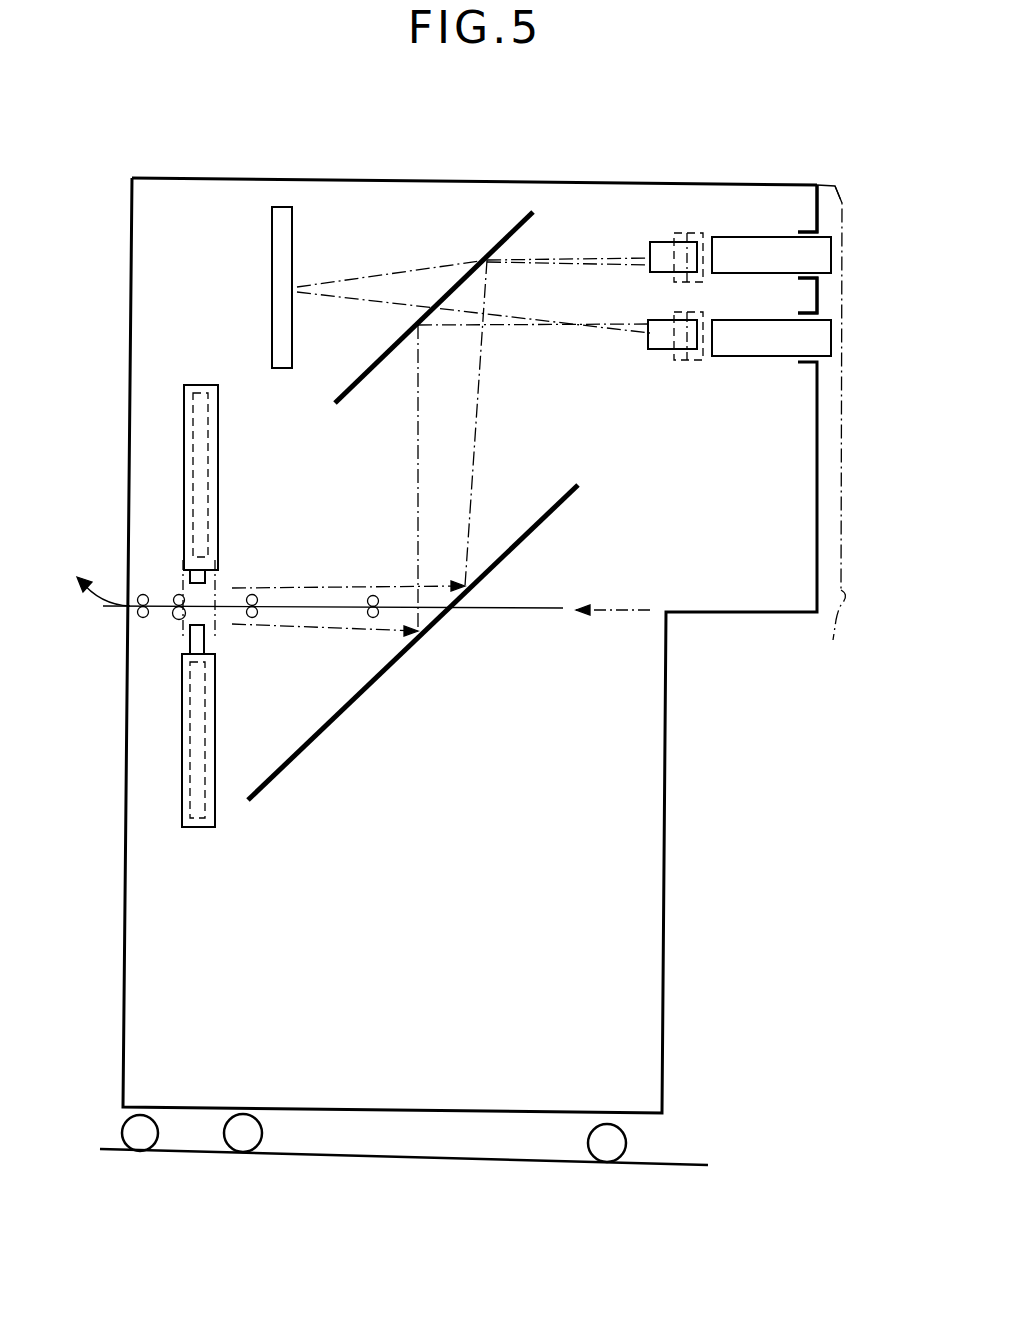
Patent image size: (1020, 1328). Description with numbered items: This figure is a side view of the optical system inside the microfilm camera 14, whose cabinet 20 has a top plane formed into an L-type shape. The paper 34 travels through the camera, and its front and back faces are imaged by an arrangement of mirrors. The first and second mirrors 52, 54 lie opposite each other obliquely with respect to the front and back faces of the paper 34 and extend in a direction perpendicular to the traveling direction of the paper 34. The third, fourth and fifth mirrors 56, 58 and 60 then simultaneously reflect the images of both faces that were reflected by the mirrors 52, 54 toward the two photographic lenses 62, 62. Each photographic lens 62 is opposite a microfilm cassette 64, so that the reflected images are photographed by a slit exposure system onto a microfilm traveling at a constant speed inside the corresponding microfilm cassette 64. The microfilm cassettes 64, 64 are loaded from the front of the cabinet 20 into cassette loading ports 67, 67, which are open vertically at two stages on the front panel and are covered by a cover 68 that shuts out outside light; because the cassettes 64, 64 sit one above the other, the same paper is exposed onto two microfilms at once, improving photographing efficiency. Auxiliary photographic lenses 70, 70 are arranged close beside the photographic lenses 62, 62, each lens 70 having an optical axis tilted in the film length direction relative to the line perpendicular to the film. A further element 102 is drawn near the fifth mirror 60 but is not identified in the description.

The microfilm camera 14 is at (716, 834).
The cabinet 20 is at (666, 780).
The paper 34 is at (517, 600).
The first mirror 52 is at (187, 565).
The second mirror 54 is at (192, 640).
The third mirror 56 is at (182, 760).
The fourth mirror 58 is at (365, 700).
The fifth mirror 60 is at (347, 383).
The photographic lens 62 is at (660, 242).
The microfilm cassette 64 is at (770, 237).
The cassette loading port 67 is at (820, 232).
The cover 68 is at (837, 437).
The auxiliary photographic lens 70 is at (687, 233).
The filter plate 102 is at (272, 290).